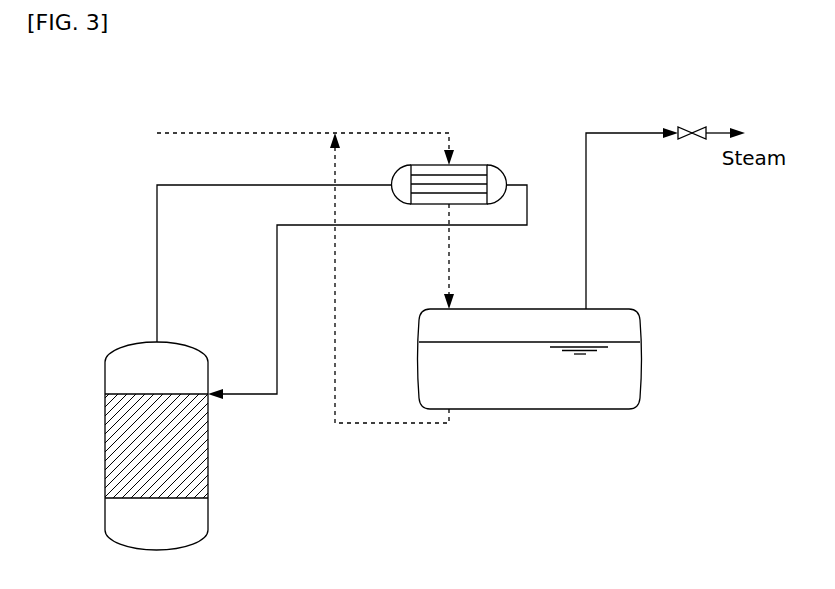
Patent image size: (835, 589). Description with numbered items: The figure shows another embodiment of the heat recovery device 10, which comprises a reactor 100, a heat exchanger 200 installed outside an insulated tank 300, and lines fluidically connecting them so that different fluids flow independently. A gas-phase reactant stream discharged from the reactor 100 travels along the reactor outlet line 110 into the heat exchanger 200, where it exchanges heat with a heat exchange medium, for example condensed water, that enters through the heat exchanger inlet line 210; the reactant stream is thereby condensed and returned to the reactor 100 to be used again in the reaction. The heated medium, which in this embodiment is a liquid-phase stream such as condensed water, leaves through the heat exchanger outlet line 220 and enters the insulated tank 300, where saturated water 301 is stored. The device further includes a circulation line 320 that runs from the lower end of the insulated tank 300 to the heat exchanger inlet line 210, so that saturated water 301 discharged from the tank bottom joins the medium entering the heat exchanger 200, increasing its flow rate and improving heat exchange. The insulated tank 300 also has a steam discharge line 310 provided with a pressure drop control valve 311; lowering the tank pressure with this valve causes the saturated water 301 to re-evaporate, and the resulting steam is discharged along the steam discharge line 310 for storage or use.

The heat recovery device 10 is at (104, 133).
The reactor 100 is at (208, 535).
The reactor outlet line 110 is at (157, 250).
The heat exchanger 200 is at (492, 165).
The heat exchanger inlet line 210 is at (424, 133).
The heat exchanger outlet line 220 is at (449, 258).
The insulated tank 300 is at (571, 393).
The saturated water 301 is at (623, 381).
The steam discharge line 310 is at (588, 212).
The pressure drop control valve 311 is at (692, 127).
The circulation line 320 is at (385, 425).